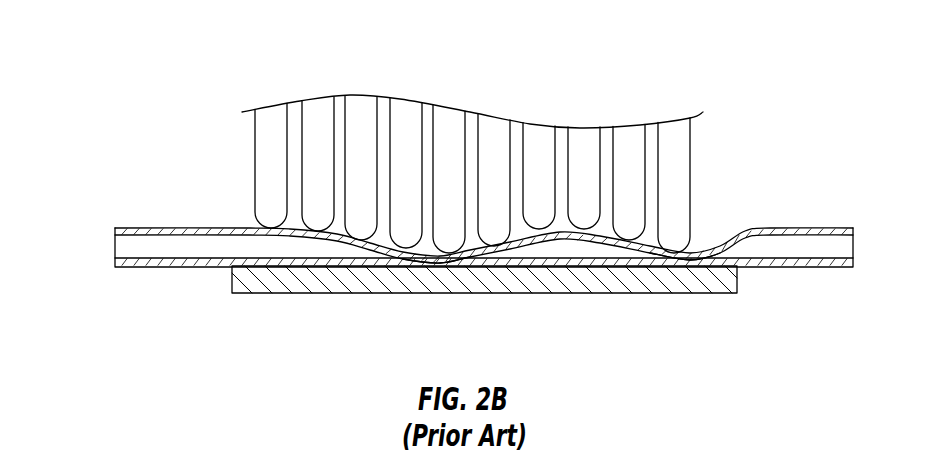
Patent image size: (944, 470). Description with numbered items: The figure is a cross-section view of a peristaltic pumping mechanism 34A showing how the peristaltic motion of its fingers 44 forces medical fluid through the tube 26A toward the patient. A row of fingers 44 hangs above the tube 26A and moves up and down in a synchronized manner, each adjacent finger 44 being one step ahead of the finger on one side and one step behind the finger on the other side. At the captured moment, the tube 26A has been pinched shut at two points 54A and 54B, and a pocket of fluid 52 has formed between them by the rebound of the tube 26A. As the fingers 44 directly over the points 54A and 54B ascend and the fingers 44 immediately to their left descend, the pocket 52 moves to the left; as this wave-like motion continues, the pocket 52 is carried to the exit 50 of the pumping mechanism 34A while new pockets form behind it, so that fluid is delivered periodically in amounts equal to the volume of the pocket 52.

The pumping mechanism 34A is at (435, 135).
The fingers 44 is at (268, 157).
The tube 26A is at (135, 213).
The exit 50 is at (448, 259).
The pocket of fluid 52 is at (577, 250).
The first pinch point 54A is at (445, 255).
The second pinch point 54B is at (673, 258).